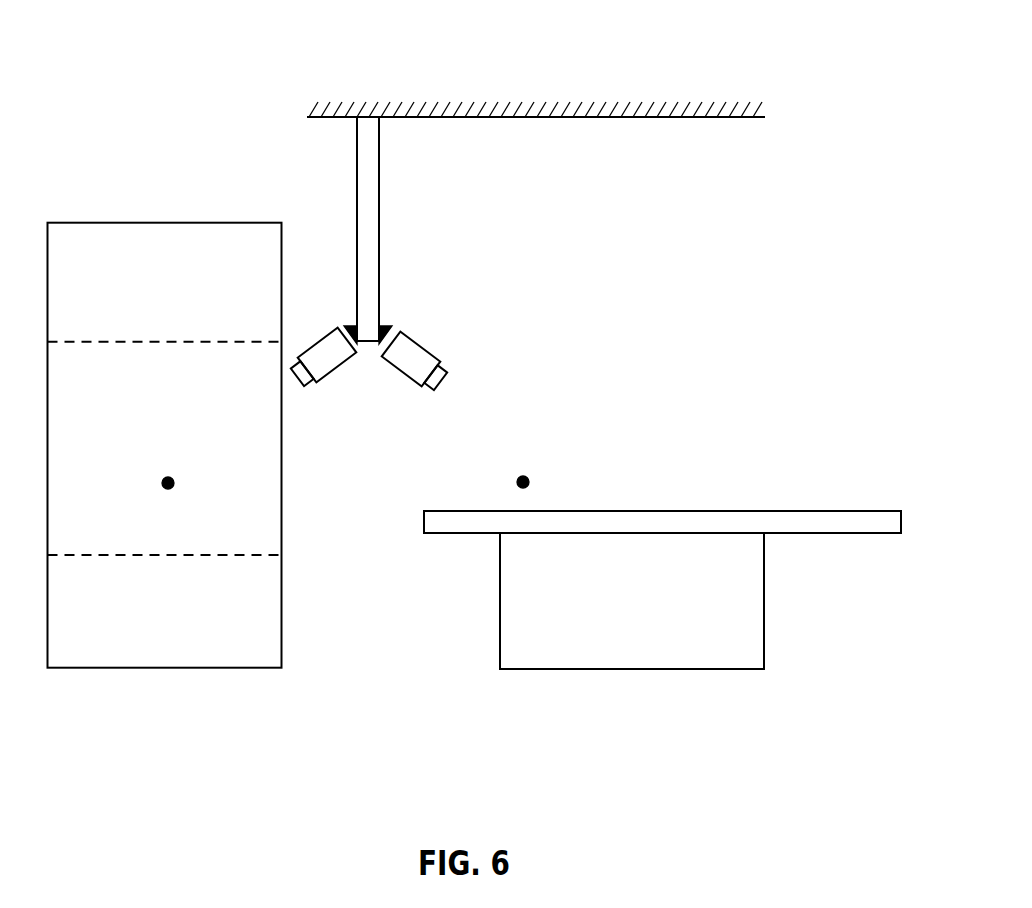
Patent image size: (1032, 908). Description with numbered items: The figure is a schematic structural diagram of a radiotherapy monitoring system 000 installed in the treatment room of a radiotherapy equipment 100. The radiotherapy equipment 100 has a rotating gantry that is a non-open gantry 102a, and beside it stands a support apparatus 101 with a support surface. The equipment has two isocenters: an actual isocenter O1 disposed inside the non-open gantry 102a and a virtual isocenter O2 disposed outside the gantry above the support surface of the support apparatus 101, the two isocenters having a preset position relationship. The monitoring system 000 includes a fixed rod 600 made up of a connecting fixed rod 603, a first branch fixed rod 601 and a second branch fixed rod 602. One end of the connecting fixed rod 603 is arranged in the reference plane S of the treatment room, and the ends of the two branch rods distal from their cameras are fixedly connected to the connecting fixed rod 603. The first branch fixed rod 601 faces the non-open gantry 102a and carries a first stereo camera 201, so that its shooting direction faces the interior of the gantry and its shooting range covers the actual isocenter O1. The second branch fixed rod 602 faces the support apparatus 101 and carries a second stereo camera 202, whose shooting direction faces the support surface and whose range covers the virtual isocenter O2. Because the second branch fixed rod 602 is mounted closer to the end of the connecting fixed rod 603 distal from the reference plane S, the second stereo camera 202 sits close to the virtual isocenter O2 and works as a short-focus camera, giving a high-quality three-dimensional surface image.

The radiotherapy monitoring system 000 is at (80, 50).
The reference plane S is at (498, 133).
The fixed rod 600 is at (403, 286).
The first branch fixed rod 601 is at (344, 324).
The second branch fixed rod 602 is at (392, 326).
The connecting fixed rod 603 is at (381, 190).
The first stereo camera 201 is at (327, 364).
The second stereo camera 202 is at (413, 368).
The radiotherapy equipment 100 is at (475, 504).
The non-open gantry 102a is at (268, 635).
The support apparatus 101 is at (662, 628).
The actual isocenter O1 is at (167, 463).
The virtual isocenter O2 is at (522, 467).